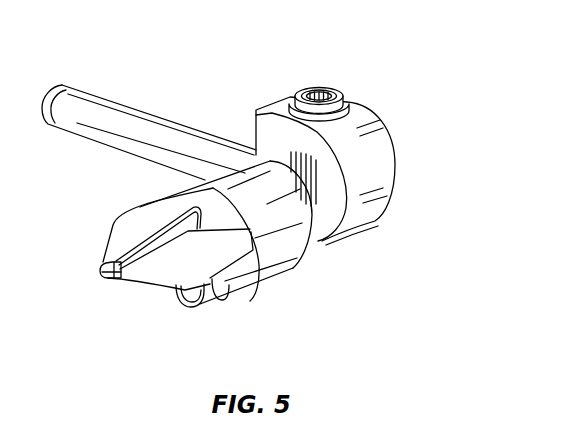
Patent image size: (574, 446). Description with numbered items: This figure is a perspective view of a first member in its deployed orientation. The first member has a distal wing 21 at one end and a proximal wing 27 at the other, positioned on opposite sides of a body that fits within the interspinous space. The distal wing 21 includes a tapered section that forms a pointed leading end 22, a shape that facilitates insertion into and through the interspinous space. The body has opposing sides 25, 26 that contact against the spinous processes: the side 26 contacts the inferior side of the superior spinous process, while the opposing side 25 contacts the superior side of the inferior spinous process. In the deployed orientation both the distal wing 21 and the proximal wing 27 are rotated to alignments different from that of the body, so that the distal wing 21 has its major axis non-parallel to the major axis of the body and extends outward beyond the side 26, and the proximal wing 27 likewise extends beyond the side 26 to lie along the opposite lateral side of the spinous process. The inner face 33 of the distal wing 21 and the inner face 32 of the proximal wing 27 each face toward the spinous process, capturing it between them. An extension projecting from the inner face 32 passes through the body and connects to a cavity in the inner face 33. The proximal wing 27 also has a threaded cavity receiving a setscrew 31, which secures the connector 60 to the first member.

The distal wing 21 is at (182, 257).
The pointed leading end 22 is at (103, 274).
The side of the body 25 is at (200, 183).
The side of the body 26 is at (277, 267).
The proximal wing 27 is at (356, 127).
The setscrew 31 is at (330, 89).
The inner face of the proximal wing 32 is at (329, 174).
The inner face of the distal wing 33 is at (250, 231).
The connector 60 is at (103, 112).